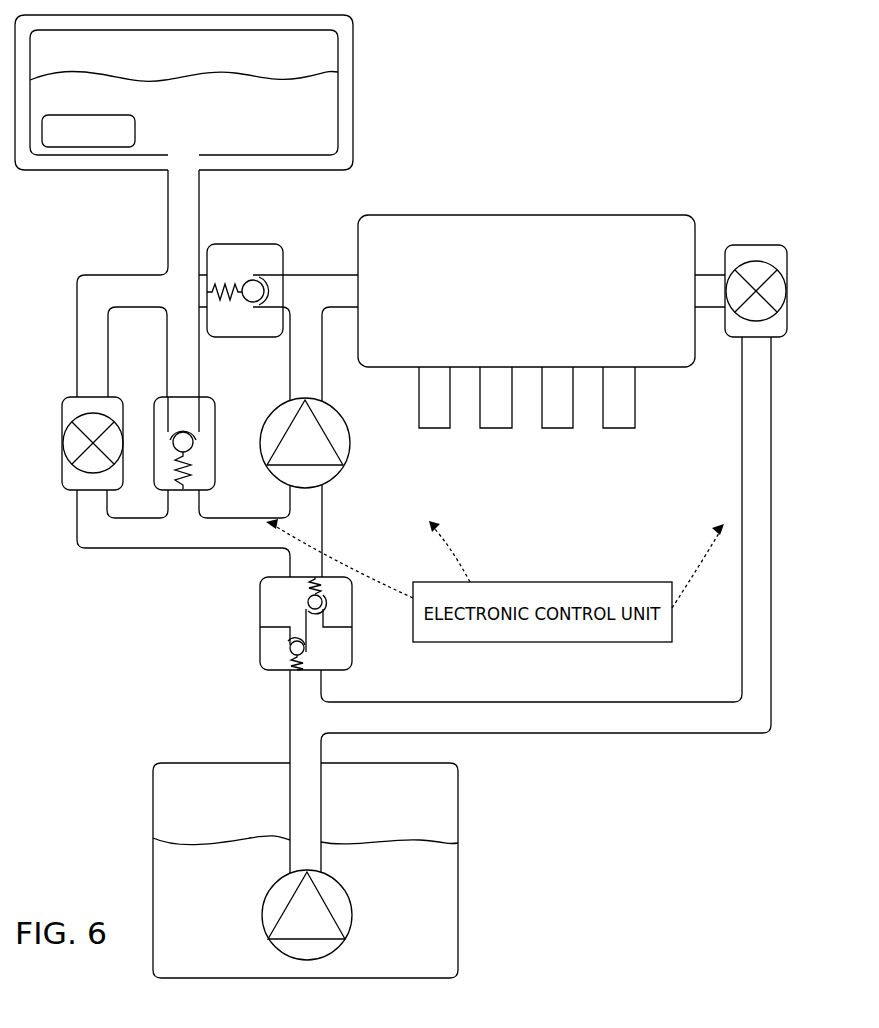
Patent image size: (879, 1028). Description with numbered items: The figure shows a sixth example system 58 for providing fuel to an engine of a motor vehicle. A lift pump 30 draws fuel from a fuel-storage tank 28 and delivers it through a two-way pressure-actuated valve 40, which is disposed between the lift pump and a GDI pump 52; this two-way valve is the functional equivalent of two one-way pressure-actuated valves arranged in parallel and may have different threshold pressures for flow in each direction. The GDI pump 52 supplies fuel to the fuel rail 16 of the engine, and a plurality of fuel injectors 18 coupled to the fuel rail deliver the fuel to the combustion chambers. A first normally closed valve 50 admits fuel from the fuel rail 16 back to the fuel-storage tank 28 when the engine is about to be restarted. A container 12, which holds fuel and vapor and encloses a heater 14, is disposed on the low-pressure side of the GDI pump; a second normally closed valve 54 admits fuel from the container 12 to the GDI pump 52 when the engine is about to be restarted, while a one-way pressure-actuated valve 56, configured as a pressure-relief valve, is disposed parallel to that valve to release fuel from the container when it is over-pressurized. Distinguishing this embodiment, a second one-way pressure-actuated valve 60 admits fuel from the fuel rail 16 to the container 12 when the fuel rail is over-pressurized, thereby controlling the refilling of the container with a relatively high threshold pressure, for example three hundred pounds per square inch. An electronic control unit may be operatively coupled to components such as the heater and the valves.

The container 12 is at (353, 78).
The heater 14 is at (88, 131).
The fuel rail 16 is at (526, 291).
The fuel injectors 18 is at (662, 398).
The fuel-storage tank 28 is at (458, 793).
The lift pump 30 is at (262, 917).
The two-way pressure-actuated valve 40 is at (260, 627).
The first normally closed valve 50 is at (757, 245).
The GDI pump 52 is at (280, 400).
The second normally closed valve 54 is at (62, 440).
The one-way pressure-actuated valve 56 is at (216, 443).
The sixth example system 58 is at (80, 641).
The second one-way pressure-actuated valve 60 is at (245, 244).